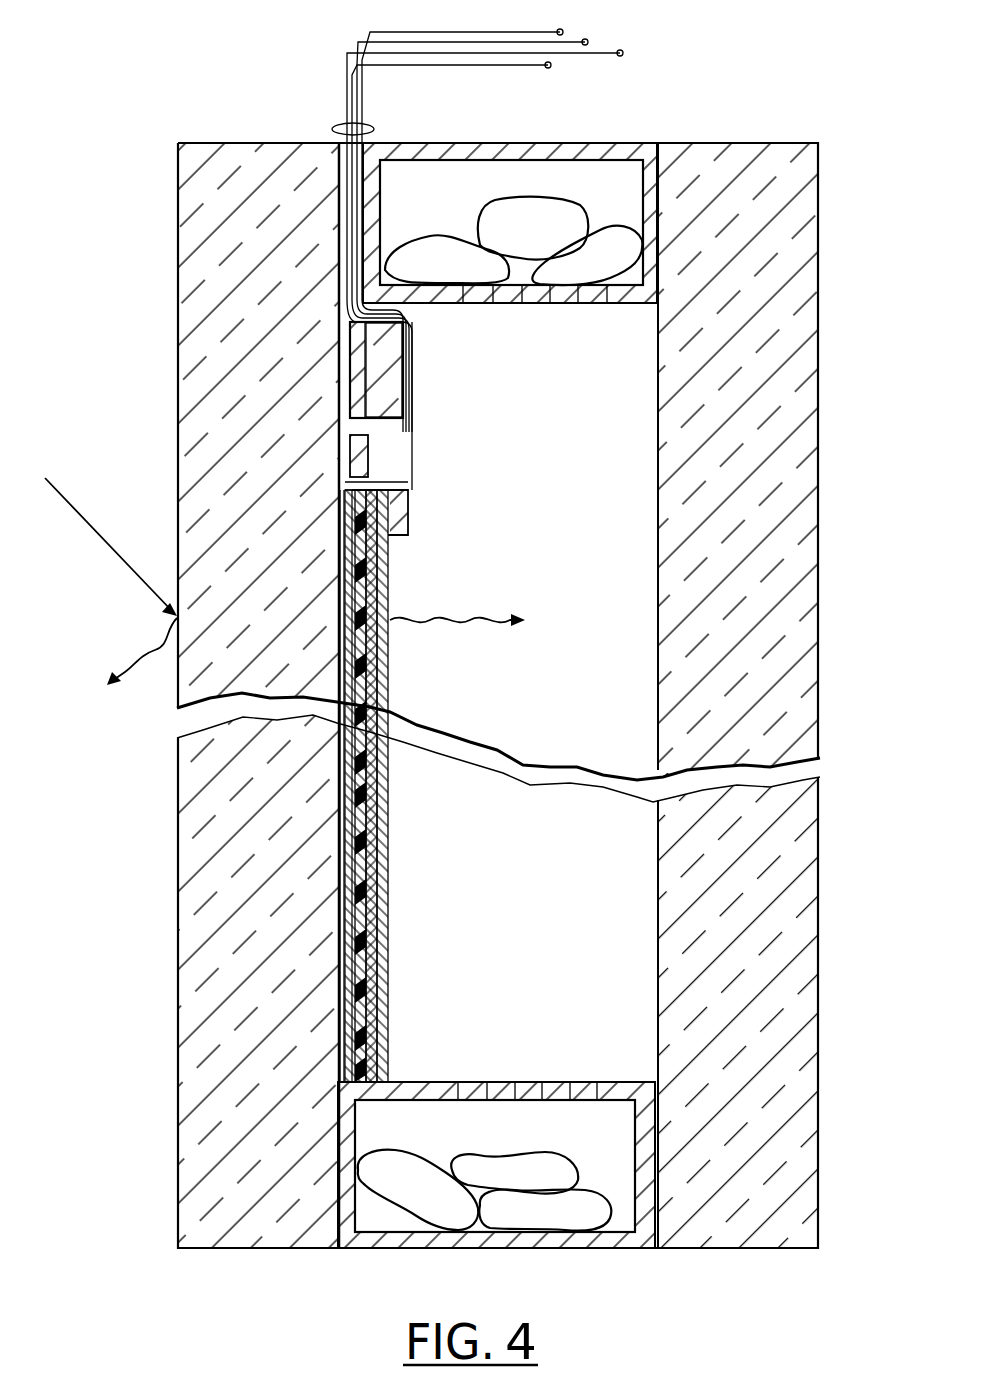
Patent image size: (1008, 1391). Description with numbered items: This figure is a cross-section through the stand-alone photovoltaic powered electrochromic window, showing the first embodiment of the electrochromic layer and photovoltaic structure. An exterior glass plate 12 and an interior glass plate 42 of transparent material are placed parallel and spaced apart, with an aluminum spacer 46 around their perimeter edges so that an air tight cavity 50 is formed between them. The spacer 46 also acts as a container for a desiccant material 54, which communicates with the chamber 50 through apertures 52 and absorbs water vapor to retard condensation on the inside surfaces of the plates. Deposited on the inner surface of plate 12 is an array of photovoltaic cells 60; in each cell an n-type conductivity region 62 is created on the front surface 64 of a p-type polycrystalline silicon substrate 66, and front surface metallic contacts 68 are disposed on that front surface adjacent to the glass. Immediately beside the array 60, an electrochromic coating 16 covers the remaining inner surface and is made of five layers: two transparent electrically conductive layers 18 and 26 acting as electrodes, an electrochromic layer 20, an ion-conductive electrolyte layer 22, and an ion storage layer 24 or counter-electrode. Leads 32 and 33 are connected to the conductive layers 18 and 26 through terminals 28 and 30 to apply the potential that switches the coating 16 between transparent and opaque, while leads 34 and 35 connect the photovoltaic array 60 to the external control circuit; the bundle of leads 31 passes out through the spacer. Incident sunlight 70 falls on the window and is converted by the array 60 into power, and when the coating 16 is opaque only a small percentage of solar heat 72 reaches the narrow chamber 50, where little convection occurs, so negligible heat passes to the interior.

The glass plate 12 is at (492, 686).
The electrochromic coating 16 is at (412, 786).
The transparent electrically conductive layer 18 is at (380, 830).
The electrochromic layer 20 is at (370, 866).
The ion-conductive electrolyte layer 22 is at (360, 895).
The ion storage layer 24 is at (352, 920).
The transparent electrically conductive layer 26 is at (345, 950).
The terminal 28 is at (360, 483).
The terminal 30 is at (405, 530).
The wire bundle 31 is at (482, 223).
The lead 32 is at (582, 40).
The lead 33 is at (365, 29).
The lead 34 is at (433, 54).
The lead 35 is at (522, 66).
The interior glass plate 42 is at (818, 615).
The aluminum spacer 46 is at (590, 140).
The air tight cavity 50 is at (531, 691).
The apertures 52 is at (578, 303).
The desiccant material 54 is at (487, 198).
The array of photovoltaic cells 60 is at (418, 404).
The n-type conductivity region 62 is at (368, 445).
The front surface 64 is at (362, 372).
The p-type polycrystalline silicon substrate 66 is at (402, 395).
The front surface metallic contacts 68 is at (402, 357).
The incident sunlight 70 is at (160, 582).
The solar heat 72 is at (435, 620).